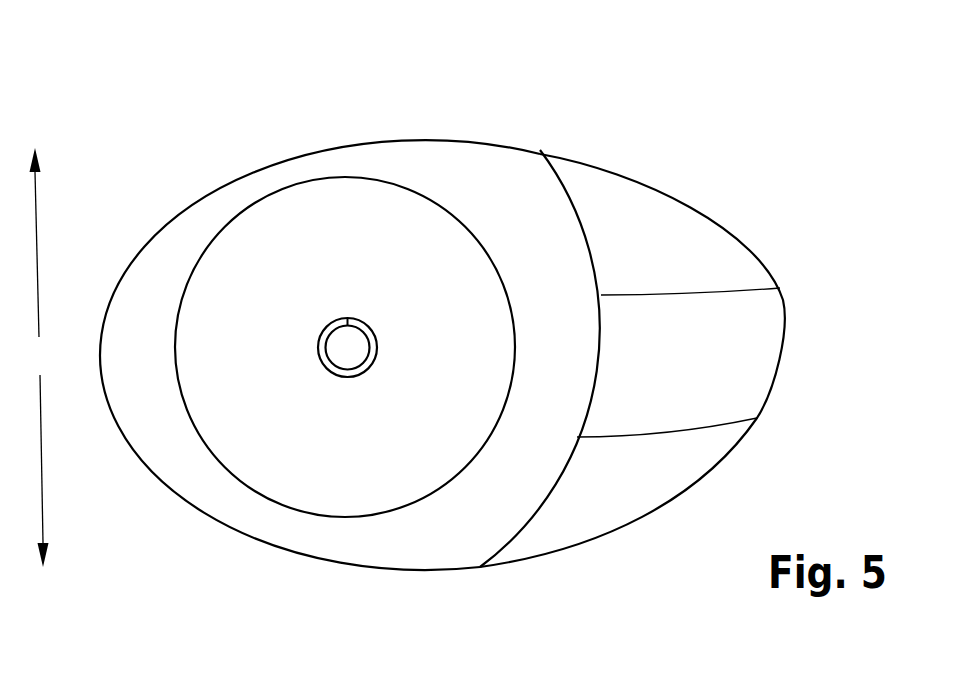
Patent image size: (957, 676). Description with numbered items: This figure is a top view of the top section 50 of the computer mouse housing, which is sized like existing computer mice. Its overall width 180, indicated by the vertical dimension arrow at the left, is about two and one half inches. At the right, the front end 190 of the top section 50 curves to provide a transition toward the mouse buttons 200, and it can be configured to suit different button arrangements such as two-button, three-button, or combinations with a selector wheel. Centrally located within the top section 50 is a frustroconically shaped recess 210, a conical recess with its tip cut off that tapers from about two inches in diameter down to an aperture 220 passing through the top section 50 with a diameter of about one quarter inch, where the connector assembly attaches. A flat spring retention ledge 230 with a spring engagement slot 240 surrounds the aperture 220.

The top section 50 is at (409, 101).
The overall width 180 is at (43, 357).
The front end 190 is at (564, 252).
The mouse buttons 200 is at (747, 128).
The frustroconically shaped recess 210 is at (352, 472).
The aperture 220 is at (353, 355).
The flat spring retention ledge 230 is at (327, 369).
The spring engagement slot 240 is at (347, 320).